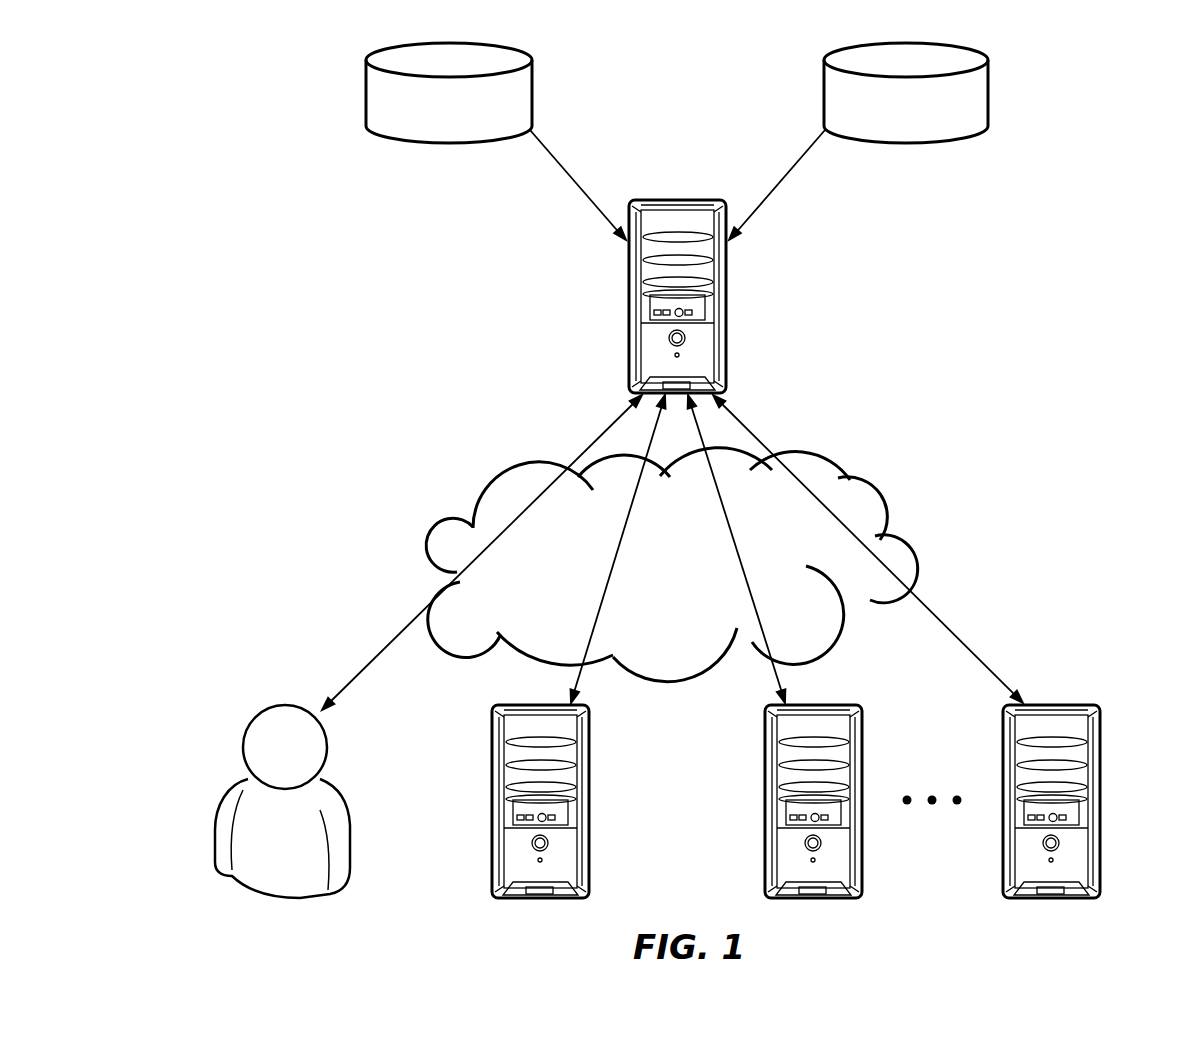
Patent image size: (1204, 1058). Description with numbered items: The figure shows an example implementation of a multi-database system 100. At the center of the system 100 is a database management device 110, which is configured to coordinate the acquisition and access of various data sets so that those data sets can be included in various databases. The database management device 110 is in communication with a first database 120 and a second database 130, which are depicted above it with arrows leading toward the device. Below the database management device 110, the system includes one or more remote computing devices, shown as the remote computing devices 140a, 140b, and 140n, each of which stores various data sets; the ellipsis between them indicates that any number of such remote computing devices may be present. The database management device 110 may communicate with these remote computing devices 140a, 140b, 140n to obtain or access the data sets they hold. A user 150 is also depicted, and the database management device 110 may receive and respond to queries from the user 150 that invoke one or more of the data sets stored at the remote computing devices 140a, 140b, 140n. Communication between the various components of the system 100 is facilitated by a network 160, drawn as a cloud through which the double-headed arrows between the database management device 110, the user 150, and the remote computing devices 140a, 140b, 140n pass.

The multi-database system 100 is at (1097, 158).
The database management device 110 is at (726, 298).
The first database 120 is at (464, 119).
The second database 130 is at (922, 119).
The remote computing device 140a is at (590, 763).
The remote computing device 140b is at (862, 763).
The remote computing device 140n is at (1100, 763).
The user 150 is at (330, 782).
The network 160 is at (688, 568).